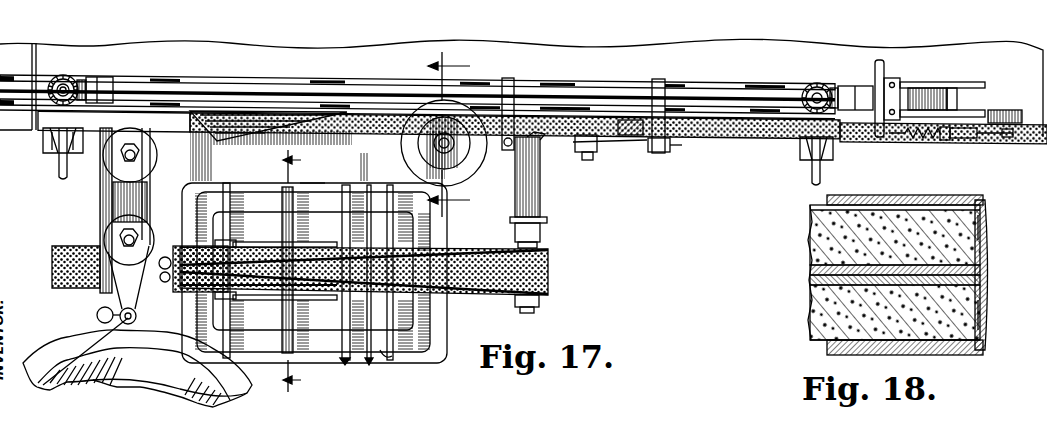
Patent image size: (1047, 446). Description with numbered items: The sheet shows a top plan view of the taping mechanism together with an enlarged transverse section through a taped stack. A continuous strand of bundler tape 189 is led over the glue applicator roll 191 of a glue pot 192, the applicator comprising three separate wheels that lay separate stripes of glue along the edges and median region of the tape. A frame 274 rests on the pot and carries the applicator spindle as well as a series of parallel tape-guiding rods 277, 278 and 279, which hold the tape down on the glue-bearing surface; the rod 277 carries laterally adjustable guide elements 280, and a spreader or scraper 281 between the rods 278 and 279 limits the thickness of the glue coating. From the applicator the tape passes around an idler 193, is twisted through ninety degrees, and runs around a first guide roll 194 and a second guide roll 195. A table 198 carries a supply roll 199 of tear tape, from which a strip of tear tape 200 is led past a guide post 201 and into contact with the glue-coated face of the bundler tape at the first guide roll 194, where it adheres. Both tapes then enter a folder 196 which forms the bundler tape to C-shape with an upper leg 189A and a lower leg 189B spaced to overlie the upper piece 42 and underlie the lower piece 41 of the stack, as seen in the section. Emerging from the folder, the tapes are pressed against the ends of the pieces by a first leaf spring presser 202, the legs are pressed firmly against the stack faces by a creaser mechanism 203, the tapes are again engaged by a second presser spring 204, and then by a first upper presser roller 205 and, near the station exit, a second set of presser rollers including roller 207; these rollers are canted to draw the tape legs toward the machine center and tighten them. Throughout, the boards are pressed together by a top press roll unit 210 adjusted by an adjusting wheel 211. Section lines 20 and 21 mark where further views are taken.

In FIG. 17, the section line 20- 20 is at (279, 271).
In FIG. 17, the section line 21- 21 is at (440, 134).
In FIG. 18, the lower piece 41 is at (820, 322).
In FIG. 18, the upper piece 42 is at (815, 240).
In FIG. 17, the tape 189 is at (62, 258).
In FIG. 18, the tape 189 is at (990, 252).
In FIG. 17, the upper leg 189A is at (745, 130).
In FIG. 18, the upper leg 189A is at (922, 196).
In FIG. 18, the lower leg 189B is at (912, 357).
In FIG. 17, the glue applicator roll 191 is at (296, 246).
In FIG. 17, the glue pot 192 is at (426, 364).
In FIG. 17, the idler 193 is at (548, 247).
In FIG. 17, the first guide roll 194 is at (108, 232).
In FIG. 17, the second guide roll 195 is at (108, 164).
In FIG. 17, the folder 196 is at (242, 131).
In FIG. 17, the table 198 is at (52, 358).
In FIG. 17, the supply roll of tear tape 199 is at (128, 383).
In FIG. 17, the tear tape 200 is at (115, 310).
In FIG. 18, the tear tape 200 is at (988, 274).
In FIG. 17, the guide post 201 is at (104, 327).
In FIG. 17, the first leaf spring presser 202 is at (404, 138).
In FIG. 17, the creaser mechanism 203 is at (481, 170).
In FIG. 17, the second presser spring 204 is at (540, 146).
In FIG. 17, the first upper presser roller 205 is at (633, 120).
In FIG. 17, the presser roller 207 is at (1006, 108).
In FIG. 17, the top press roll unit 210 is at (705, 80).
In FIG. 17, the adjusting wheel 211 is at (886, 62).
In FIG. 17, the frame 274 is at (313, 183).
In FIG. 17, the tape-guiding rod 277 is at (231, 221).
In FIG. 17, the tape-guiding rod 278 is at (345, 302).
In FIG. 17, the tape-guiding rod 279 is at (394, 354).
In FIG. 17, the guide elements 280 is at (237, 244).
In FIG. 17, the spreader or scraper 281 is at (362, 352).